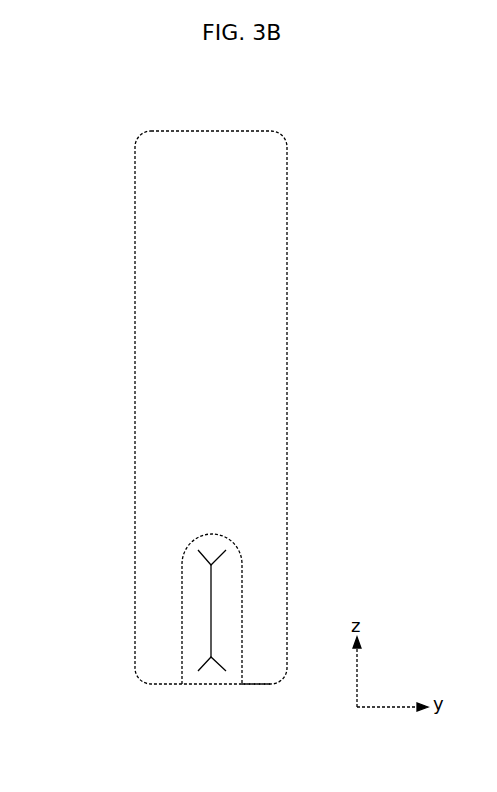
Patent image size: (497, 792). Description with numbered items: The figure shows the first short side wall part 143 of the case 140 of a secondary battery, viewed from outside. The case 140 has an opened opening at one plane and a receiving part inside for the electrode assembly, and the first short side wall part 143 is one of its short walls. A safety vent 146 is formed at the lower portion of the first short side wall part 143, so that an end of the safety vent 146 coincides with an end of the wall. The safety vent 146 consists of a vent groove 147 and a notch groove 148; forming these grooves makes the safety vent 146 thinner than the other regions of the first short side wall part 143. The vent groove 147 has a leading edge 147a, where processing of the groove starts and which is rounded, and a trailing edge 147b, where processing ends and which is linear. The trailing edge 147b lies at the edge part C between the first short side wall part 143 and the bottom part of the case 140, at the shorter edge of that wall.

The case 140 is at (118, 128).
The first short side wall part 143 is at (280, 363).
The safety vent 146 is at (181, 583).
The vent groove 147 is at (217, 674).
The leading edge 147a is at (209, 532).
The trailing edge 147b is at (198, 683).
The notch groove 148 is at (210, 627).
The edge part C is at (257, 683).